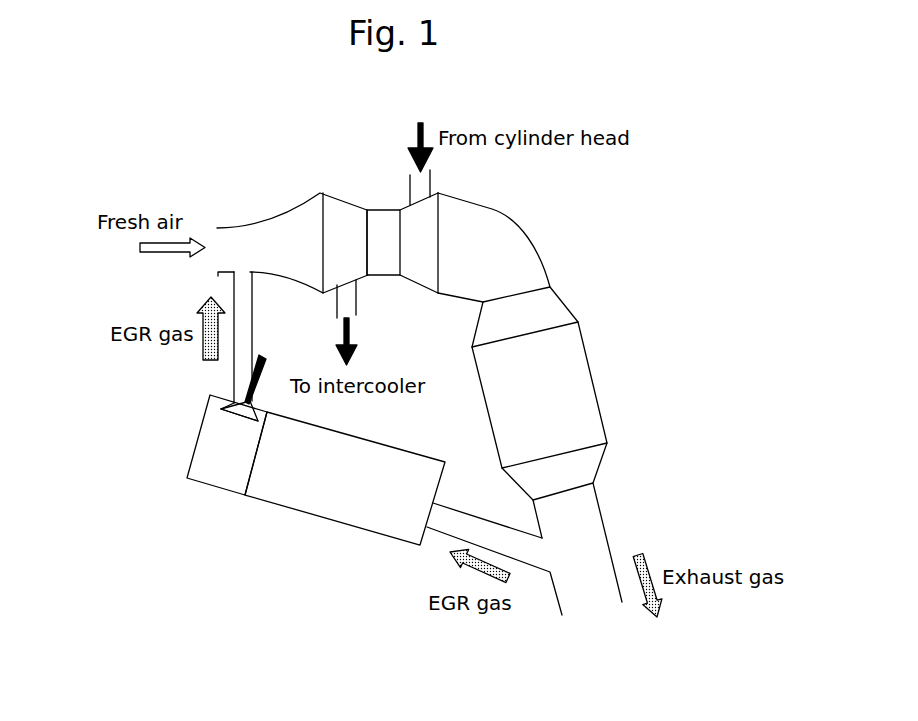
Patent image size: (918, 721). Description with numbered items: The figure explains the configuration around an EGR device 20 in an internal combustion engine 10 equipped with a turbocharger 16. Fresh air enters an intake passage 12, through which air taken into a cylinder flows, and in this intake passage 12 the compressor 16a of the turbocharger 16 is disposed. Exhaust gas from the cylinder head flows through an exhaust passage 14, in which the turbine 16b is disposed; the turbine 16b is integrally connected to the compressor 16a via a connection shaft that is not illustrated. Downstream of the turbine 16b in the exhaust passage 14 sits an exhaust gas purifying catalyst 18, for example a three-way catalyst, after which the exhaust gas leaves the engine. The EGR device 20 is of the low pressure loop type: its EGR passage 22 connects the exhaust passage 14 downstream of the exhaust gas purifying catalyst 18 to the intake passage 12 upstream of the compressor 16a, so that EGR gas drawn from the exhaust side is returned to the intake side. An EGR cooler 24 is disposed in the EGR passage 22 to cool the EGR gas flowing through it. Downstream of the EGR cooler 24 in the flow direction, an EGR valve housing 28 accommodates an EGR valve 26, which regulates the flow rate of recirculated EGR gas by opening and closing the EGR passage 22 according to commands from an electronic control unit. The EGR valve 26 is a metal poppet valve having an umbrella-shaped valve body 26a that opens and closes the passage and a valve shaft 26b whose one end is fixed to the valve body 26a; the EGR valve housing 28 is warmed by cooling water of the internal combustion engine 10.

The internal combustion engine 10 is at (593, 265).
The intake passage 12 is at (282, 233).
The exhaust passage 14 is at (423, 185).
The turbocharger 16 is at (382, 190).
The compressor 16a is at (347, 220).
The turbine 16b is at (422, 238).
The exhaust gas purifying catalyst 18 is at (567, 390).
The EGR device 20 is at (190, 493).
The EGR passage 22 is at (243, 367).
The EGR cooler 24 is at (288, 490).
The EGR valve 26 is at (259, 405).
The valve body 26a is at (222, 410).
The valve shaft 26b is at (266, 354).
The EGR valve housing 28 is at (205, 455).